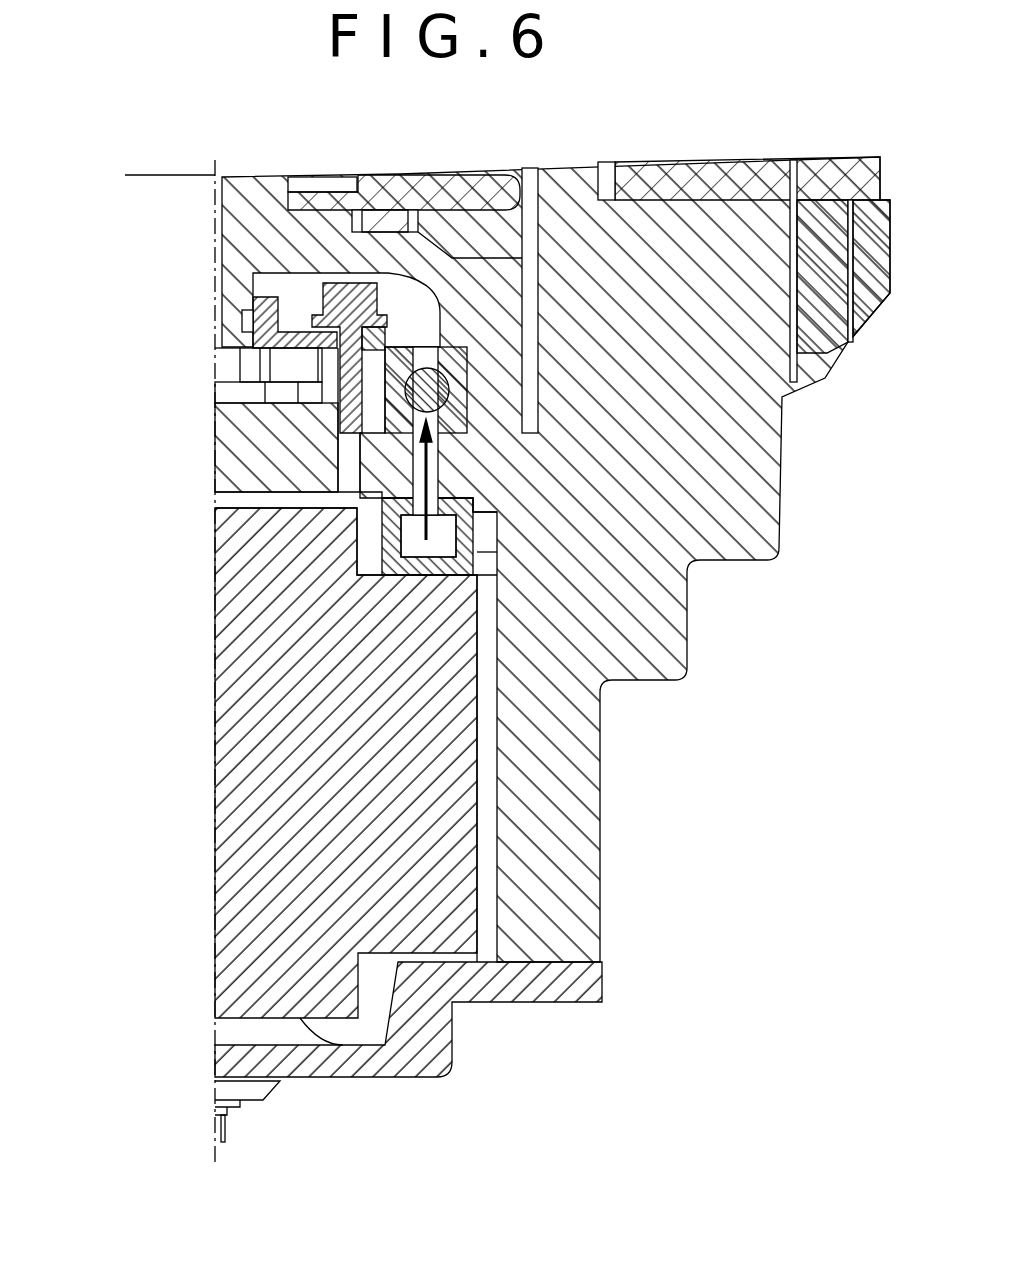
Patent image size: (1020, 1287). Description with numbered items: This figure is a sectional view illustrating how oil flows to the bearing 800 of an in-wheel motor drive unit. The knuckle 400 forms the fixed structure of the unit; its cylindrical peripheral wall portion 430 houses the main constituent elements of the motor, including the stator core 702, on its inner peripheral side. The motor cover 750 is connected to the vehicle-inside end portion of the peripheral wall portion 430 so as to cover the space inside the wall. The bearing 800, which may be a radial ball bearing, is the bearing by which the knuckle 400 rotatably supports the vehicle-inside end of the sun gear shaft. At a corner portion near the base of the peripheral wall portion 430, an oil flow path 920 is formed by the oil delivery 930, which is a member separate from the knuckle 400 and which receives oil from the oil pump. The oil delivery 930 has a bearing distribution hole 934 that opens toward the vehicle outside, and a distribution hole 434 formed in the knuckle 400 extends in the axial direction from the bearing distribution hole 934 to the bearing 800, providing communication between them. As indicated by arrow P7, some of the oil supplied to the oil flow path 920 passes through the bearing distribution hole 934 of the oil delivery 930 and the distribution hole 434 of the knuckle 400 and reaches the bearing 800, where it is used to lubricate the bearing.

The knuckle 400 is at (642, 603).
The peripheral wall portion 430 is at (600, 778).
The distribution hole 434 is at (332, 468).
The stator core 702 is at (248, 806).
The motor cover 750 is at (232, 1050).
The bearing 800 is at (378, 398).
The oil flow path 920 is at (412, 546).
The oil delivery 930 is at (398, 522).
The bearing distribution hole 934 is at (395, 504).
The arrow P7 is at (415, 447).